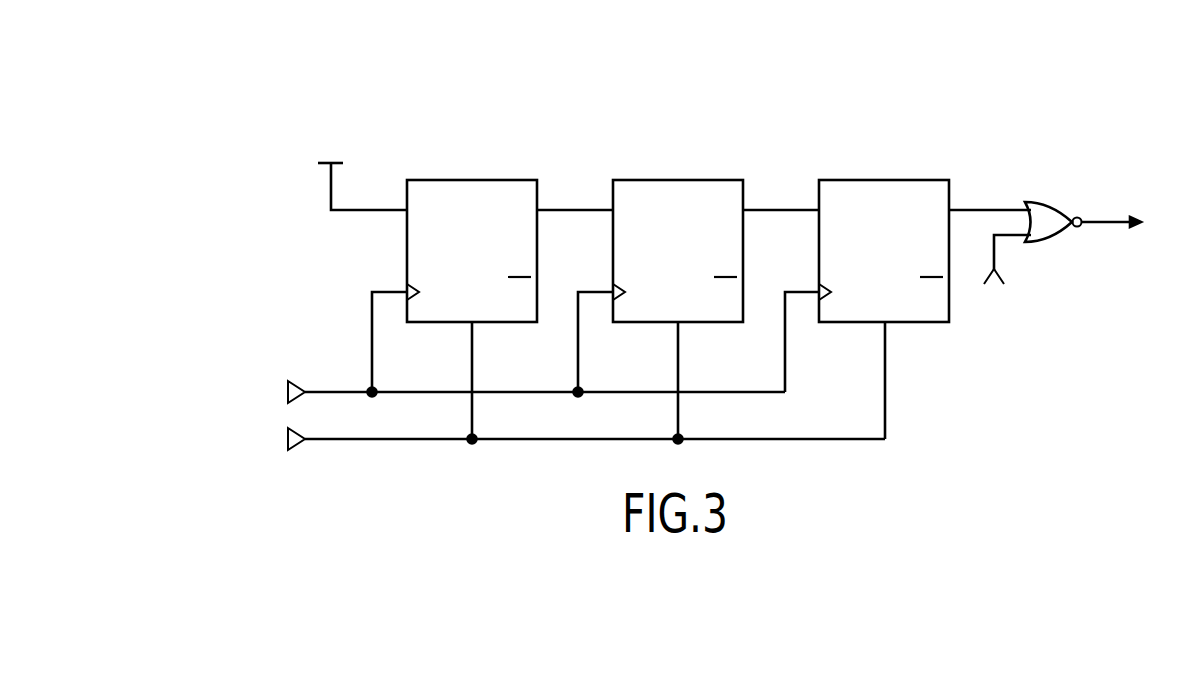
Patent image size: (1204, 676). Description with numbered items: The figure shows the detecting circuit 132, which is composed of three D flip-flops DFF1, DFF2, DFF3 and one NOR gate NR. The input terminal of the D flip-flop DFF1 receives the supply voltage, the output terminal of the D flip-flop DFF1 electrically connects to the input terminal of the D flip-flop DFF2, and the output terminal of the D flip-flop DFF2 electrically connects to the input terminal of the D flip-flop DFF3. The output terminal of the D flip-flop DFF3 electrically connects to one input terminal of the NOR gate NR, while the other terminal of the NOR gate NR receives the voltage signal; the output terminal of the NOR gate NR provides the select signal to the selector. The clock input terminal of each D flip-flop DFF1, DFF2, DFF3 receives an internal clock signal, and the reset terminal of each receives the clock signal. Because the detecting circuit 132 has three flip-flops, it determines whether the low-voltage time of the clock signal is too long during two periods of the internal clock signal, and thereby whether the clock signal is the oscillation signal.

The detecting circuit 132 is at (1028, 42).
The D flip-flop DFF1 is at (472, 180).
The D flip-flop DFF2 is at (678, 180).
The D flip-flop DFF3 is at (885, 180).
The NOR gate NR is at (1056, 200).